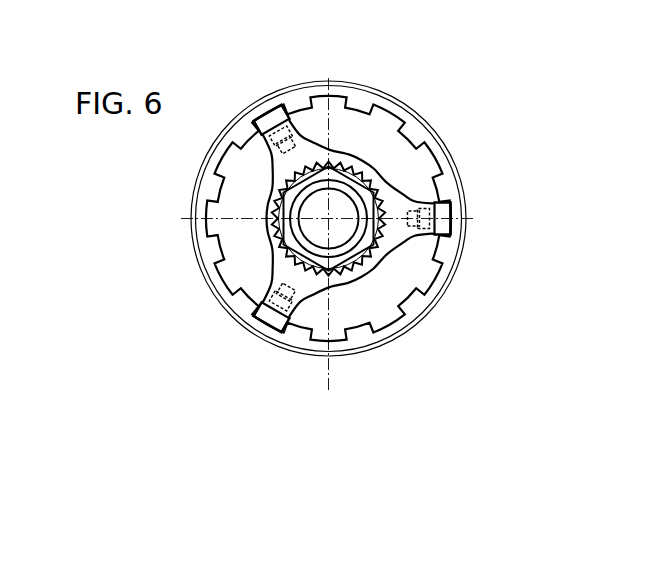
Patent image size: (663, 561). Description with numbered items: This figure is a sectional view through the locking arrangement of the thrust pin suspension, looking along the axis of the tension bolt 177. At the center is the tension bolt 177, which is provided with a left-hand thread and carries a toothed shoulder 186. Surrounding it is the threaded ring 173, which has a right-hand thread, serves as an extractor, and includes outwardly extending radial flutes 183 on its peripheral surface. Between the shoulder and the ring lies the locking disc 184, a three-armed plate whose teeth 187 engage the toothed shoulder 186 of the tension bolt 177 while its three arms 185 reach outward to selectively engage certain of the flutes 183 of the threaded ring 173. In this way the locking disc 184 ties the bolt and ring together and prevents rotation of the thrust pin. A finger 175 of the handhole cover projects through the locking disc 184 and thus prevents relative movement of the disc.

The threaded ring 173 is at (385, 105).
The finger 175 is at (422, 210).
The tension bolt 177 is at (345, 207).
The radial flutes 183 is at (425, 155).
The locking disc 184 is at (366, 245).
The arms 185 is at (270, 127).
The toothed shoulder 186 is at (275, 227).
The teeth 187 is at (387, 235).